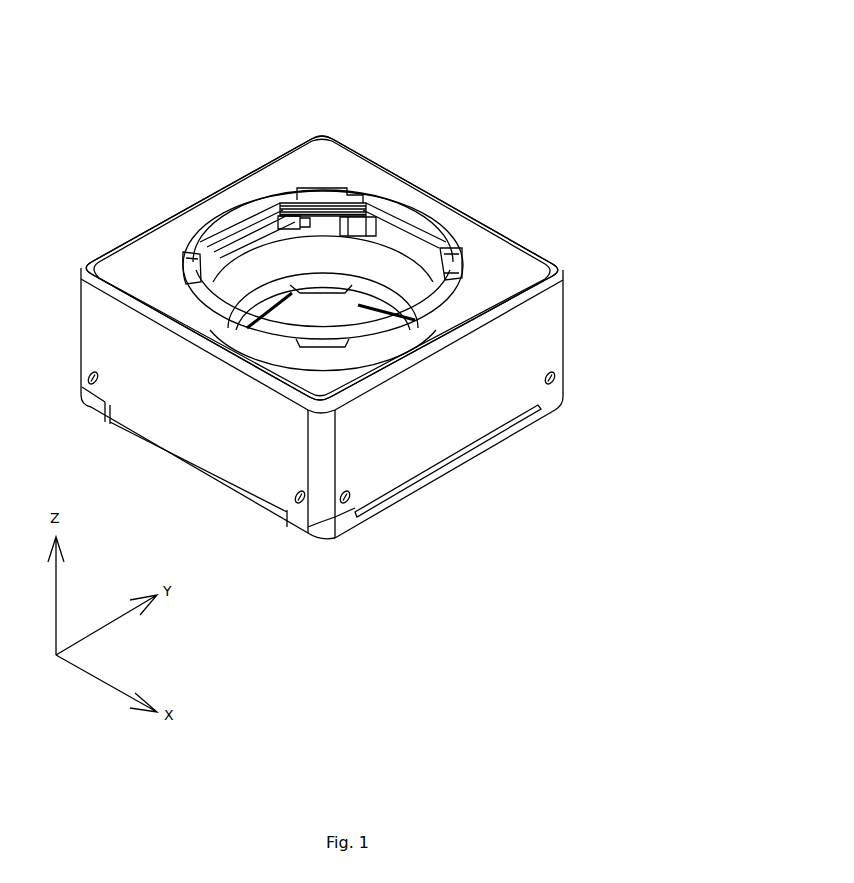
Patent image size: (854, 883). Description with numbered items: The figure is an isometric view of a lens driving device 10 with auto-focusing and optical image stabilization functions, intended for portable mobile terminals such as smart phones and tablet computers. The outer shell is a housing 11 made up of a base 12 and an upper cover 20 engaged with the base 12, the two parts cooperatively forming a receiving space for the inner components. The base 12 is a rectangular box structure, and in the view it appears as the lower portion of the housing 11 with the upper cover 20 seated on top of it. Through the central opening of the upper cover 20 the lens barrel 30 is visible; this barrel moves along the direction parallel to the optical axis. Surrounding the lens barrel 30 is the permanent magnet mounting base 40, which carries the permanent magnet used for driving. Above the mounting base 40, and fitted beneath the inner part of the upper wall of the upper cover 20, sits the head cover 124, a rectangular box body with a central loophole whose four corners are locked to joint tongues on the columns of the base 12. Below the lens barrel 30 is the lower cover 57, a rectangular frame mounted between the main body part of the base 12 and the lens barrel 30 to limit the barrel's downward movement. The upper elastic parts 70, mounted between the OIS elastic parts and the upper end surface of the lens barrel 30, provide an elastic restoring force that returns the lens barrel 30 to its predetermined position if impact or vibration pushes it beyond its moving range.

The lens driving device 10 is at (272, 97).
The housing 11 is at (732, 216).
The base 12 is at (562, 387).
The upper cover 20 is at (478, 217).
The lens barrel 30 is at (237, 280).
The permanent magnet mounting base 40 is at (403, 240).
The lower cover 57 is at (250, 230).
The upper elastic parts 70 is at (365, 207).
The head cover 124 is at (222, 220).